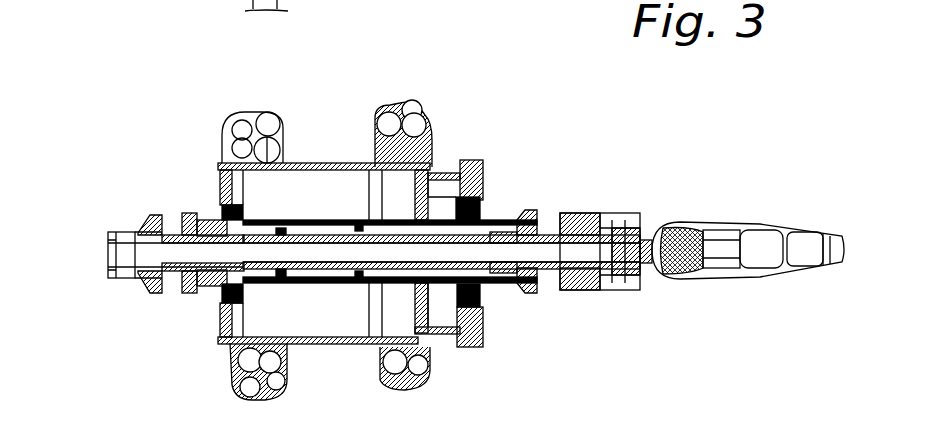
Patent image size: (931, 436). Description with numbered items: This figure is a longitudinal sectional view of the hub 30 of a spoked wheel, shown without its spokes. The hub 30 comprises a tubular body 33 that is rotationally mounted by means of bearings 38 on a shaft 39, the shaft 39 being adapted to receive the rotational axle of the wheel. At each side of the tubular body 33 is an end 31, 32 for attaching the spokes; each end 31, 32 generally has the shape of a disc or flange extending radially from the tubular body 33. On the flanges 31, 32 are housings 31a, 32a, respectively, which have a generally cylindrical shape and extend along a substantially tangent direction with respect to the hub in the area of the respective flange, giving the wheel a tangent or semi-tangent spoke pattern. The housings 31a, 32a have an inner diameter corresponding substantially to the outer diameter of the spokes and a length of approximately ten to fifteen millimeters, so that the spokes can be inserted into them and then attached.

The hub 30 is at (523, 177).
The end 31 is at (430, 140).
The housing 31a is at (430, 113).
The end 32 is at (218, 148).
The housing 32a is at (238, 137).
The tubular body 33 is at (327, 163).
The bearings 38 is at (220, 300).
The shaft 39 is at (214, 292).